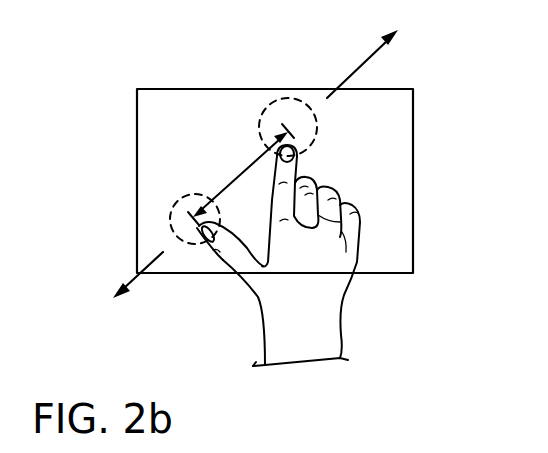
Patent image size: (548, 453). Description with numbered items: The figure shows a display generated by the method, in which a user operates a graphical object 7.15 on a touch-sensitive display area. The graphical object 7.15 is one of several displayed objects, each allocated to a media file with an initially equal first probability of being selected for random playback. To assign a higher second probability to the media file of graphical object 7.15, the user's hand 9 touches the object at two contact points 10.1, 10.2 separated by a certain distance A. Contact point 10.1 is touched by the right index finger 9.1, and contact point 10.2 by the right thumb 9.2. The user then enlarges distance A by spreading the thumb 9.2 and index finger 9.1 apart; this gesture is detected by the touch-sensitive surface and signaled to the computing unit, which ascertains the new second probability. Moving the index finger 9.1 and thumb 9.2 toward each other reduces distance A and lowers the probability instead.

The graphical object 7.15 is at (395, 200).
The hand 9 is at (331, 251).
The index finger 9.1 is at (286, 164).
The thumb 9.2 is at (226, 255).
The contact point 10.1 is at (272, 128).
The contact point 10.2 is at (178, 218).
The space between the contact points A is at (238, 180).